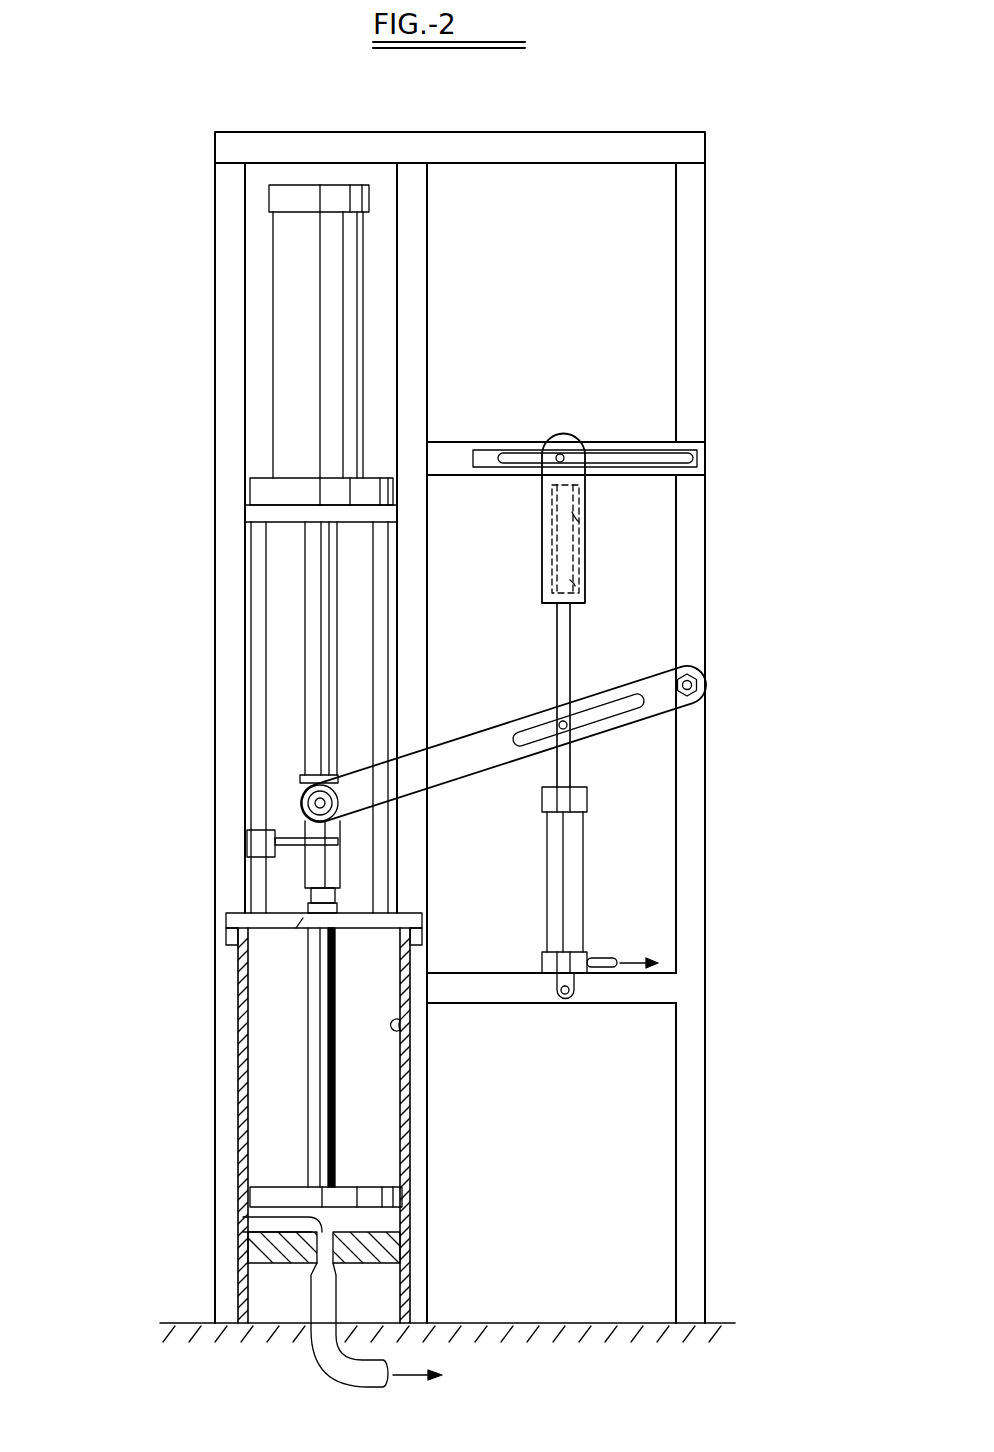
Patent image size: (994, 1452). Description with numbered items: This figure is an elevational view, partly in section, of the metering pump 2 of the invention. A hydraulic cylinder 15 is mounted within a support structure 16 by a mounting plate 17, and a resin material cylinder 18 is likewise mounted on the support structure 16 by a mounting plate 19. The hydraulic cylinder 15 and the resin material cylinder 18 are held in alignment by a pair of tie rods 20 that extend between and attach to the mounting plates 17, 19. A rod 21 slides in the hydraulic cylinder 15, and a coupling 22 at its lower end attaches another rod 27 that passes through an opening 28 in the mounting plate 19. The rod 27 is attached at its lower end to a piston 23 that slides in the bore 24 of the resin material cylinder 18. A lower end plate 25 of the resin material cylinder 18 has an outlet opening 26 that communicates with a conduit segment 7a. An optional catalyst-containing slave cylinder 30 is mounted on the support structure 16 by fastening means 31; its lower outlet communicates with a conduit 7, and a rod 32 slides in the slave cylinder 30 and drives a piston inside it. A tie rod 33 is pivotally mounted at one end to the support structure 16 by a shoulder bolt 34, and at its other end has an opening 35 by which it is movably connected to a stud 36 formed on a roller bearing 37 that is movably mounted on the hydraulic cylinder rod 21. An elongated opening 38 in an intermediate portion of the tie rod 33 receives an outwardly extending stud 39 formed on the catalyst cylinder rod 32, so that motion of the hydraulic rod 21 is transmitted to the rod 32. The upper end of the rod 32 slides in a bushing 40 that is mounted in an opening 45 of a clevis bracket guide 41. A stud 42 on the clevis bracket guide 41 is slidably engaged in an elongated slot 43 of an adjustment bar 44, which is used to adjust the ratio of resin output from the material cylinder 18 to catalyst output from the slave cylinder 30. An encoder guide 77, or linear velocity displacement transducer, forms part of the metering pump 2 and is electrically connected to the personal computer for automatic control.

The metering pump 2 is at (704, 375).
The conduit 7 is at (603, 958).
The conduit segment 7a is at (315, 1348).
The hydraulic cylinder 15 is at (282, 270).
The support structure 16 is at (705, 420).
The mounting plate 17 is at (255, 510).
The resin material cylinder 18 is at (408, 1094).
The mounting plate 19 is at (300, 925).
The tie rods 20 is at (258, 555).
The rod 21 is at (318, 648).
The coupling 22 is at (335, 876).
The piston 23 is at (270, 1196).
The bore 24 is at (405, 1025).
The lower end plate 25 is at (405, 1246).
The outlet opening 26 is at (243, 1228).
The rod 27 is at (315, 1047).
The opening 28 is at (303, 928).
The catalyst-containing slave cylinder 30 is at (583, 890).
The fastening means 31 is at (578, 1000).
The rod 32 is at (558, 648).
The tie rod 33 is at (668, 712).
The shoulder bolt 34 is at (700, 680).
The opening 35 is at (310, 787).
The stud 36 is at (338, 808).
The roller bearing 37 is at (310, 833).
The elongated opening 38 is at (598, 718).
The stud 39 is at (560, 720).
The bushing 40 is at (577, 583).
The clevis bracket guide 41 is at (586, 566).
The stud 42 is at (558, 454).
The elongated slot 43 is at (623, 455).
The adjustment bar 44 is at (693, 460).
The opening 45 is at (580, 518).
The encoder guide 77 is at (258, 848).